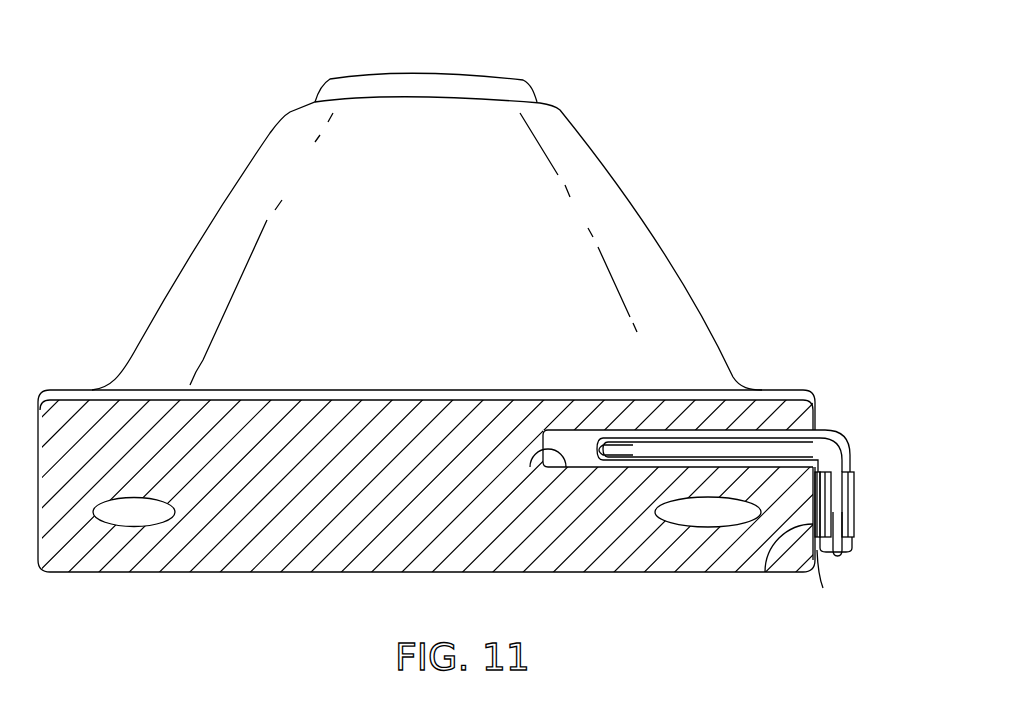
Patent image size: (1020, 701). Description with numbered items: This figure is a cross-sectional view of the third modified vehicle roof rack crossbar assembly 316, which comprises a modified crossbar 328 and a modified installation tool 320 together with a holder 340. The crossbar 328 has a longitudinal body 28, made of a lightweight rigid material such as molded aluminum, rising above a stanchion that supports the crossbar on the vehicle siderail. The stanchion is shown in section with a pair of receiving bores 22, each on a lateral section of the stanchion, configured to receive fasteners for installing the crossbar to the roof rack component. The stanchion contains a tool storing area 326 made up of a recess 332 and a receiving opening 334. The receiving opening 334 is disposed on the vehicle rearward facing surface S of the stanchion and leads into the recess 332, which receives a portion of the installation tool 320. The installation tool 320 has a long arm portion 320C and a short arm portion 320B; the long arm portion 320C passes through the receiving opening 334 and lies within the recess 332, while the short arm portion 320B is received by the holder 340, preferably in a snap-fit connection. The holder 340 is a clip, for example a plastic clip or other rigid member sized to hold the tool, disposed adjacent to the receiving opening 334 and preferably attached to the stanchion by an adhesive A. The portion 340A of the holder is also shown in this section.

The third modified vehicle roof rack crossbar assembly 316 is at (476, 330).
The longitudinal body 28 is at (347, 77).
The crossbar 328 is at (217, 208).
The long arm portion 320C is at (668, 437).
The receiving opening 334 is at (829, 428).
The tool storing area 326 is at (755, 491).
The short arm portion 320B is at (853, 462).
The holder 340 is at (856, 508).
The connector tab 340A is at (848, 556).
The installation tool 320 is at (844, 578).
The vehicle rearward facing surface S is at (816, 575).
The adhesive A is at (778, 560).
The recess 332 is at (543, 456).
The receiving bores 22 is at (148, 513).